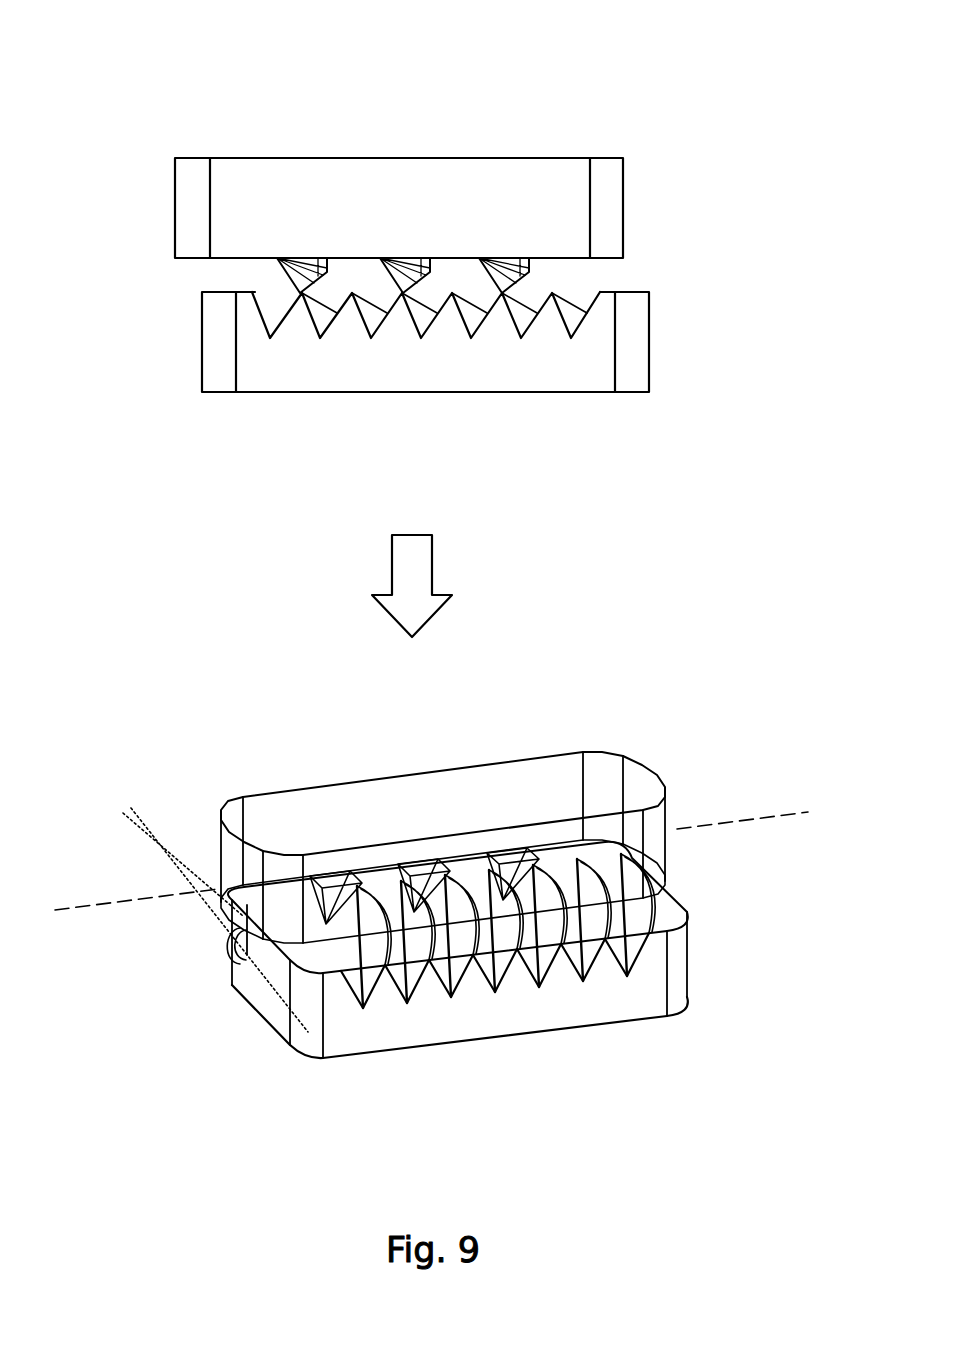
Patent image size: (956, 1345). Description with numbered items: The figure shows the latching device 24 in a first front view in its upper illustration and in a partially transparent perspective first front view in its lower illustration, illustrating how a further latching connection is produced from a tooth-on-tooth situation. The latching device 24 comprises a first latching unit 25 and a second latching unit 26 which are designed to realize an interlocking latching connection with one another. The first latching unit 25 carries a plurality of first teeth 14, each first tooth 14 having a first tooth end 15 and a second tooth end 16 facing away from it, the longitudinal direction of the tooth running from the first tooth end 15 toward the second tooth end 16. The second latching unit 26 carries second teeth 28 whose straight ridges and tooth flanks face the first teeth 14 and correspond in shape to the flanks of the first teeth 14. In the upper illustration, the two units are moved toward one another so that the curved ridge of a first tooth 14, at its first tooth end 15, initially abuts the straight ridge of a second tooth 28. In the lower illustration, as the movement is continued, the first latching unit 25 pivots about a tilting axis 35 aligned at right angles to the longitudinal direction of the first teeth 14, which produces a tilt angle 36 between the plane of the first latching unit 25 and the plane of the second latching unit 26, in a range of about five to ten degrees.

The first tooth 14 is at (408, 507).
The first tooth end 15 is at (496, 957).
The second tooth end 16 is at (406, 860).
The latching device 24 is at (407, 479).
The first latching unit 25 is at (175, 147).
The second latching unit 26 is at (406, 733).
The second teeth 28 is at (453, 700).
The tilting axis 35 is at (772, 816).
The tilt angle 36 is at (172, 862).